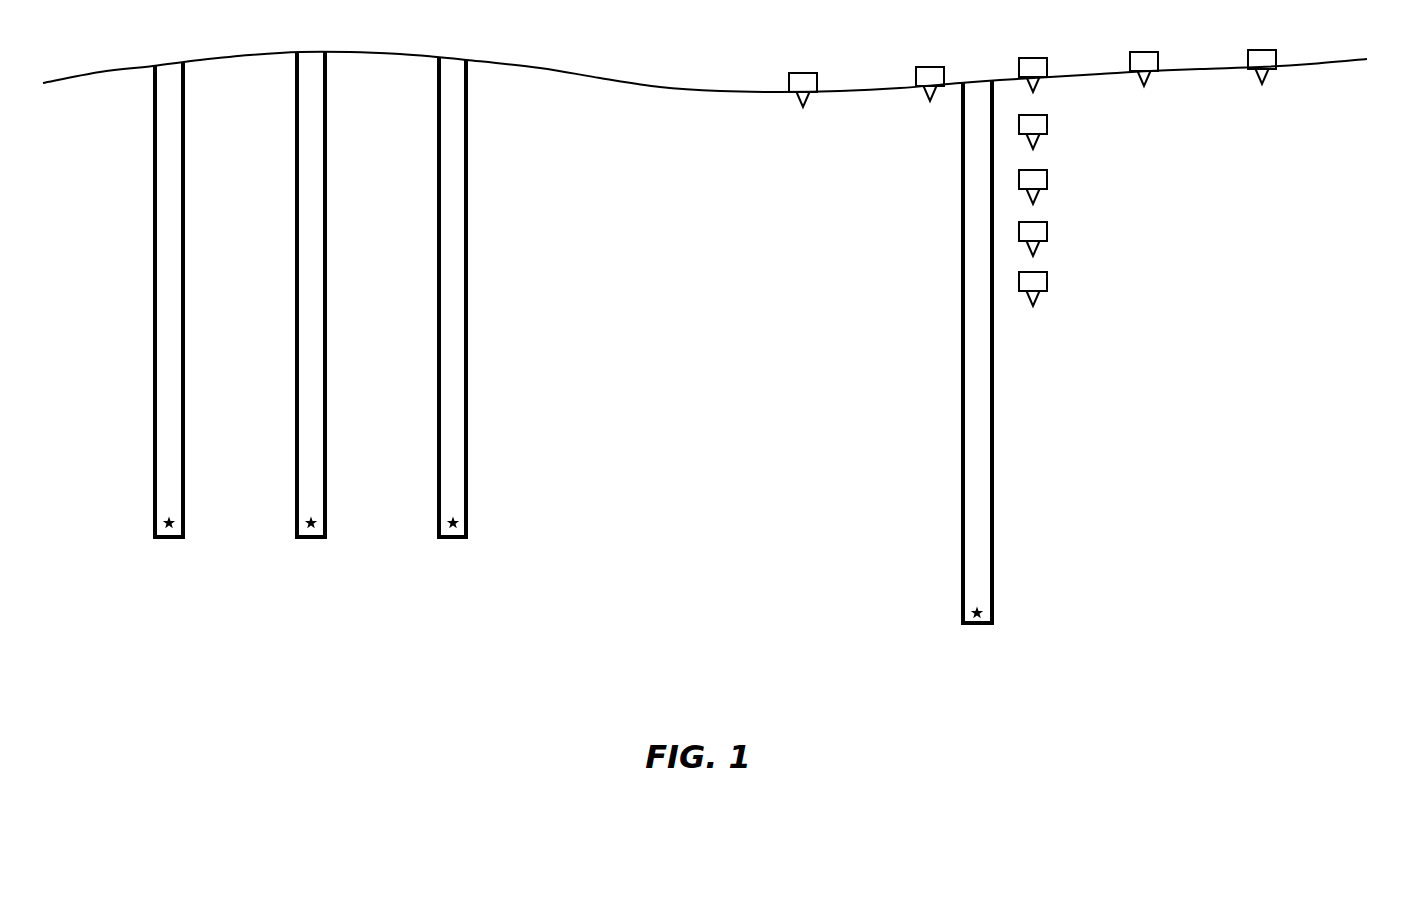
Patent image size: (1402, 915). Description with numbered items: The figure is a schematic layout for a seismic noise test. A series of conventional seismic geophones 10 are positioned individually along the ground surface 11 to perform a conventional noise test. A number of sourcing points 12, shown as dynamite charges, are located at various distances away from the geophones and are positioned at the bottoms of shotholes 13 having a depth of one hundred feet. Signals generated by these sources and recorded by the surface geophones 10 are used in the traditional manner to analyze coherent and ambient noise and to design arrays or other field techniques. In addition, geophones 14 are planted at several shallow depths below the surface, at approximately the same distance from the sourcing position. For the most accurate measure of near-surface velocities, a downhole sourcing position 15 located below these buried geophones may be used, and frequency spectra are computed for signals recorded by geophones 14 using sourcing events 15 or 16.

The seismic geophones 10 is at (1033, 66).
The ground surface 11 is at (722, 72).
The sourcing points 12 is at (406, 524).
The shotholes 13 is at (402, 294).
The geophones 14 is at (1051, 209).
The downhole sourcing position 15 is at (998, 354).
The sourcing event 16 is at (189, 300).